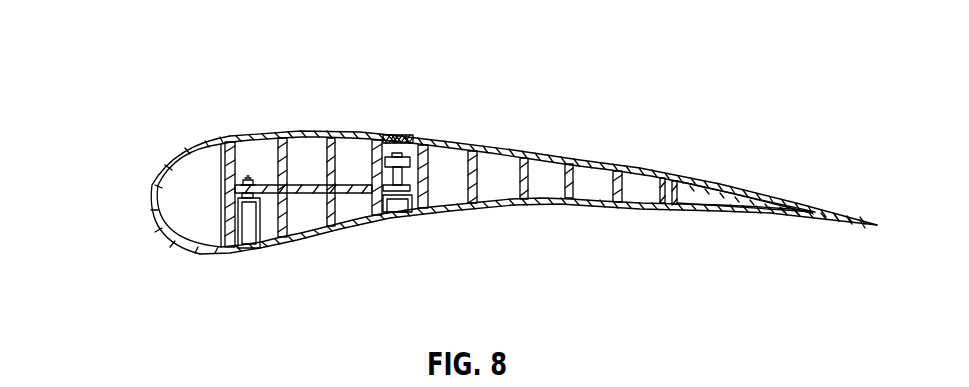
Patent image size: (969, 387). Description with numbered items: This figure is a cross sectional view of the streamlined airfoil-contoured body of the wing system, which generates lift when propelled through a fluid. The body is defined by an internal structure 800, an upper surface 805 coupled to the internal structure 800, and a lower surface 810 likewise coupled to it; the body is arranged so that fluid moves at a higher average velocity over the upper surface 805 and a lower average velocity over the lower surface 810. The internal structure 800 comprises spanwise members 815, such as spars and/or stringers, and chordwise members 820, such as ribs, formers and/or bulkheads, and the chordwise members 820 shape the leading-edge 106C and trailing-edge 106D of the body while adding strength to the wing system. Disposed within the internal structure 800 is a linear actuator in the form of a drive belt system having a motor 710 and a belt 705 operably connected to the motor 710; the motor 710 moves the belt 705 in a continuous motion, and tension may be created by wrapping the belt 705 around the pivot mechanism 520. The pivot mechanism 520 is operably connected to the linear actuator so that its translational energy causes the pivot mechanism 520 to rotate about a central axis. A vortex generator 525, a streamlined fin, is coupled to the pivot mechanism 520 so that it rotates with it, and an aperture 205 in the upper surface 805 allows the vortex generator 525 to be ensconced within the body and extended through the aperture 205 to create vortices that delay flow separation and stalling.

The internal structure 800 is at (112, 72).
The leading-edge 106C is at (150, 212).
The trailing-edge 106D is at (878, 224).
The aperture 205 is at (392, 135).
The vortex generator 525 is at (399, 153).
The pivot mechanism 520 is at (400, 204).
The belt 705 is at (238, 190).
The motor 710 is at (245, 179).
The upper surface 805 is at (299, 133).
The lower surface 810 is at (348, 231).
The spanwise members 815 is at (525, 178).
The chordwise members 820 is at (182, 256).